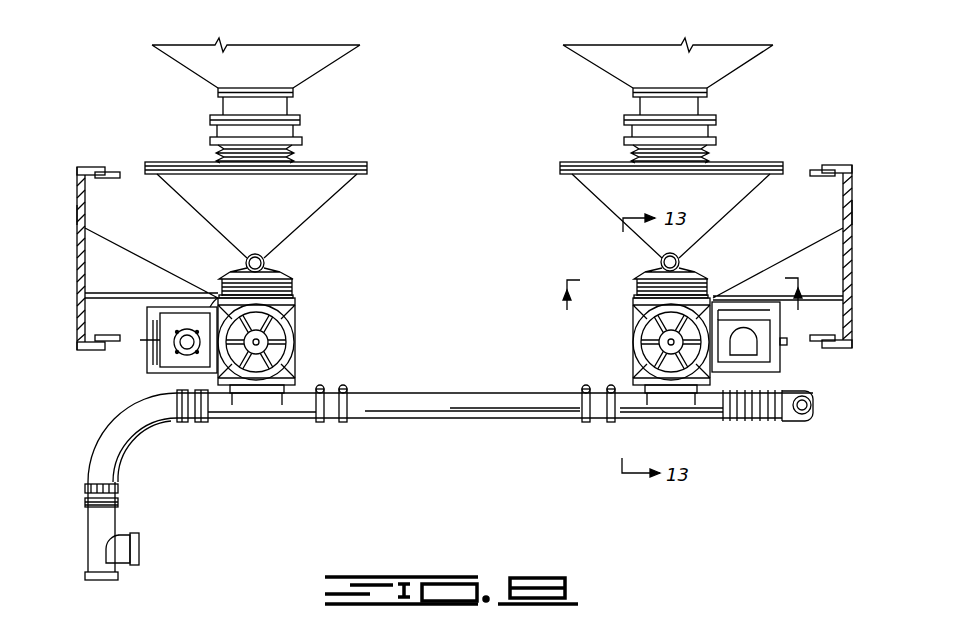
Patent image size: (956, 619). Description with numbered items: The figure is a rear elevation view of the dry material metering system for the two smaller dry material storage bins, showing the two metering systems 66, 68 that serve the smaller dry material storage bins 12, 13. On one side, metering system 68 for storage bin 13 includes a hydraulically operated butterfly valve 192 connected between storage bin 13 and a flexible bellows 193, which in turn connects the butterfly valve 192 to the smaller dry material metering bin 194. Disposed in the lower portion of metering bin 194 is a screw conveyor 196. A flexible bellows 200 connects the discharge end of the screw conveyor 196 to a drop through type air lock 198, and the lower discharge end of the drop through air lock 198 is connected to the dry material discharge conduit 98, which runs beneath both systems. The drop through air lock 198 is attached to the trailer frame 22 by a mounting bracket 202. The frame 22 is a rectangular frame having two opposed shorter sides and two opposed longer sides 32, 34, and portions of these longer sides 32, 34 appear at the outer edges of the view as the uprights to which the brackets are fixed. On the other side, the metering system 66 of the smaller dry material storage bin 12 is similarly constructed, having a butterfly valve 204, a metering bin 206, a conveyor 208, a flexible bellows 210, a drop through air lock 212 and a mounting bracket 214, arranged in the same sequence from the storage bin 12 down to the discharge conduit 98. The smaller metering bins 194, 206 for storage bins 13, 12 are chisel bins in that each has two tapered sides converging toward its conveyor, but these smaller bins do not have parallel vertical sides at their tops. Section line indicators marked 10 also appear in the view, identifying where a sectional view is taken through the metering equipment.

The smaller dry material storage bin 13 is at (264, 73).
The smaller dry material storage bin 12 is at (680, 73).
The hydraulically operated butterfly valve 192 is at (290, 131).
The flexible bellows 193 is at (292, 158).
The metering bin 194 is at (322, 200).
The screw conveyor 196 is at (243, 260).
The metering system 68 is at (310, 256).
The flexible bellows 200 is at (294, 287).
The drop through air lock 198 is at (296, 316).
The mounting bracket 202 is at (108, 252).
The frame 22 is at (76, 202).
The fourth longer side 34 is at (77, 212).
The butterfly valve 204 is at (636, 129).
The metering bin 206 is at (590, 181).
The metering system 66 is at (617, 251).
The conveyor 208 is at (682, 258).
The flexible bellows 210 is at (640, 287).
The drop through air lock 212 is at (636, 373).
The mounting bracket 214 is at (806, 254).
The third longer side 32 is at (853, 216).
The section line 10 is at (682, 305).
The dry material discharge conduit 98 is at (412, 402).